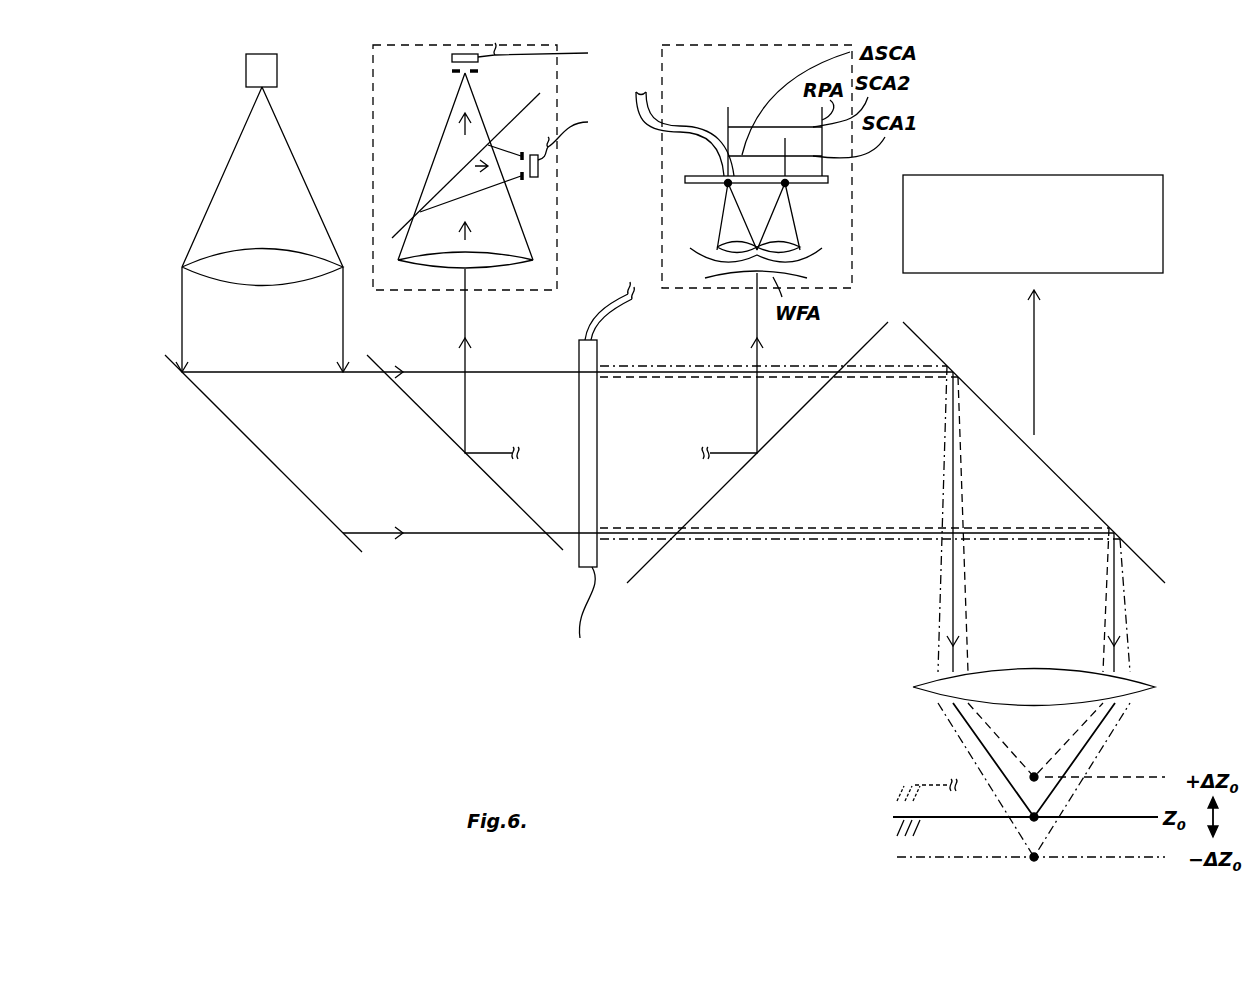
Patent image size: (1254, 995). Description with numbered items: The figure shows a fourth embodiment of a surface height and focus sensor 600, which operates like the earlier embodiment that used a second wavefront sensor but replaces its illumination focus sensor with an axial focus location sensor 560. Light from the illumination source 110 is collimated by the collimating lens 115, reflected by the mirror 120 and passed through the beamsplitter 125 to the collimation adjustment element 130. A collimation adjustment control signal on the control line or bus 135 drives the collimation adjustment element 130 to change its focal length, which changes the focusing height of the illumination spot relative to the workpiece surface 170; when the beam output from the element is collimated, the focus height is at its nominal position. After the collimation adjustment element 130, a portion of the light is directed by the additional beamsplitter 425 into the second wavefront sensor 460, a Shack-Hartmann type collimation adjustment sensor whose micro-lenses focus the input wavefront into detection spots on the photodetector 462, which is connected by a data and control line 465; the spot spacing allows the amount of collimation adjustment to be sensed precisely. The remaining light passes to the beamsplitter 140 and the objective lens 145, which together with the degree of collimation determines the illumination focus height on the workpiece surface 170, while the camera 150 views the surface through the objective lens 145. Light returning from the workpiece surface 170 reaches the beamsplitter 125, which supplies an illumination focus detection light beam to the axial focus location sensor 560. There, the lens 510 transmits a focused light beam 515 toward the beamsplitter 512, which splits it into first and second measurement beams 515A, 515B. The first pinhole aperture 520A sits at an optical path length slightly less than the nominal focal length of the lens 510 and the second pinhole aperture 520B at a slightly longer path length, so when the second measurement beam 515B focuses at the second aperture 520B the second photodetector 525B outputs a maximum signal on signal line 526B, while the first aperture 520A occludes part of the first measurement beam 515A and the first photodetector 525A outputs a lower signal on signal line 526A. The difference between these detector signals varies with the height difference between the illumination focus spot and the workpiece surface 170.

The illumination source 110 is at (246, 67).
The collimating lens 115 is at (236, 264).
The mirror 120 is at (295, 483).
The beamsplitter 125 is at (500, 487).
The collimation adjustment element 130 is at (598, 483).
The control line or bus 135 is at (636, 300).
The beamsplitter 140 is at (1065, 482).
The objective lens 145 is at (913, 687).
The camera 150 is at (1147, 173).
The workpiece surface 170 is at (940, 820).
The beamsplitter 425 is at (818, 395).
The second wavefront sensor 460 is at (662, 255).
The photodetector 462 is at (685, 178).
The data and control line 465 is at (654, 72).
The lens 510 is at (533, 260).
The beamsplitter 512 is at (400, 232).
The focused light beam 515 is at (452, 230).
The first measurement beam 515A is at (475, 173).
The second measurement beam 515B is at (460, 143).
The first pinhole aperture 520A is at (523, 178).
The second pinhole aperture 520B is at (462, 76).
The first photodetector 525A is at (538, 173).
The second photodetector 525B is at (452, 58).
The signal line 526A is at (587, 143).
The signal line 526B is at (548, 53).
The axial focus location sensor 560 is at (373, 58).
The surface height and focus sensor 600 is at (197, 722).